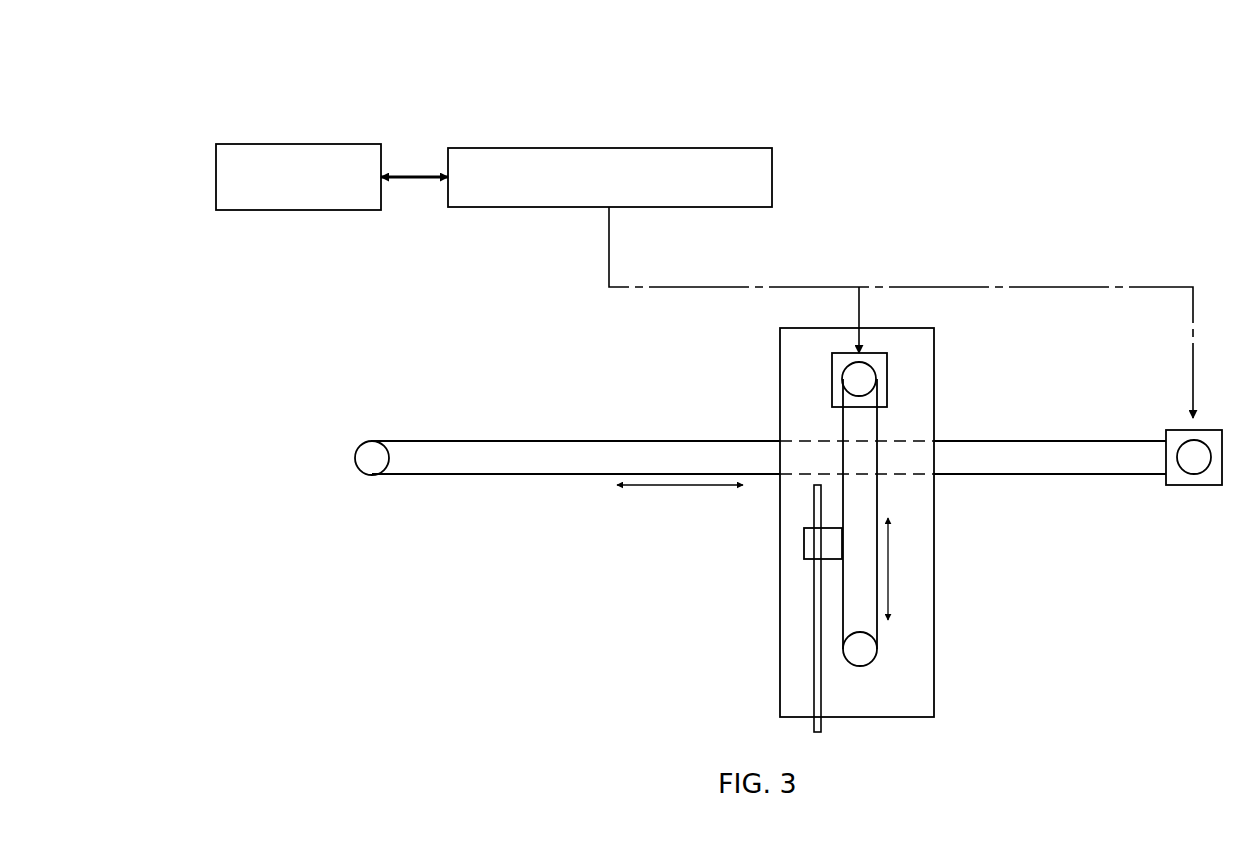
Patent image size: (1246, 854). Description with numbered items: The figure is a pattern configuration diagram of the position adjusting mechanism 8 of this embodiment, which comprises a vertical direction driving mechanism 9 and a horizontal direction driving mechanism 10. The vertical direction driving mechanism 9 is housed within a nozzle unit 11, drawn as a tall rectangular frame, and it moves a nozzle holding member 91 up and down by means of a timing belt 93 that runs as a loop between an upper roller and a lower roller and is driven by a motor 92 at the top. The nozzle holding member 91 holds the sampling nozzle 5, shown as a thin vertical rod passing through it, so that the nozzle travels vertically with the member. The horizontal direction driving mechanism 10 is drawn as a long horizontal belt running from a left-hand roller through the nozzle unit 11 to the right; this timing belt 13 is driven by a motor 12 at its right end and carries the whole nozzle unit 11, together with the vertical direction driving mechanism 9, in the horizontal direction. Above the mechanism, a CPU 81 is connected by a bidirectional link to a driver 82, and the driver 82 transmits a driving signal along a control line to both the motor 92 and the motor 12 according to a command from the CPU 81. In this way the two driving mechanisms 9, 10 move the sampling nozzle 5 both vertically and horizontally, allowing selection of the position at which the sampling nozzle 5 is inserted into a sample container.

The position adjusting mechanism 8 is at (1081, 118).
The CPU 81 is at (299, 144).
The driver 82 is at (608, 148).
The horizontal direction driving mechanism 10 is at (648, 413).
The nozzle unit 11 is at (935, 418).
The motor 12 is at (1190, 485).
The timing belt 13 is at (1047, 475).
The vertical direction driving mechanism 9 is at (917, 617).
The motor 92 is at (887, 362).
The timing belt 93 is at (877, 637).
The nozzle holding member 91 is at (804, 543).
The sampling nozzle 5 is at (815, 647).